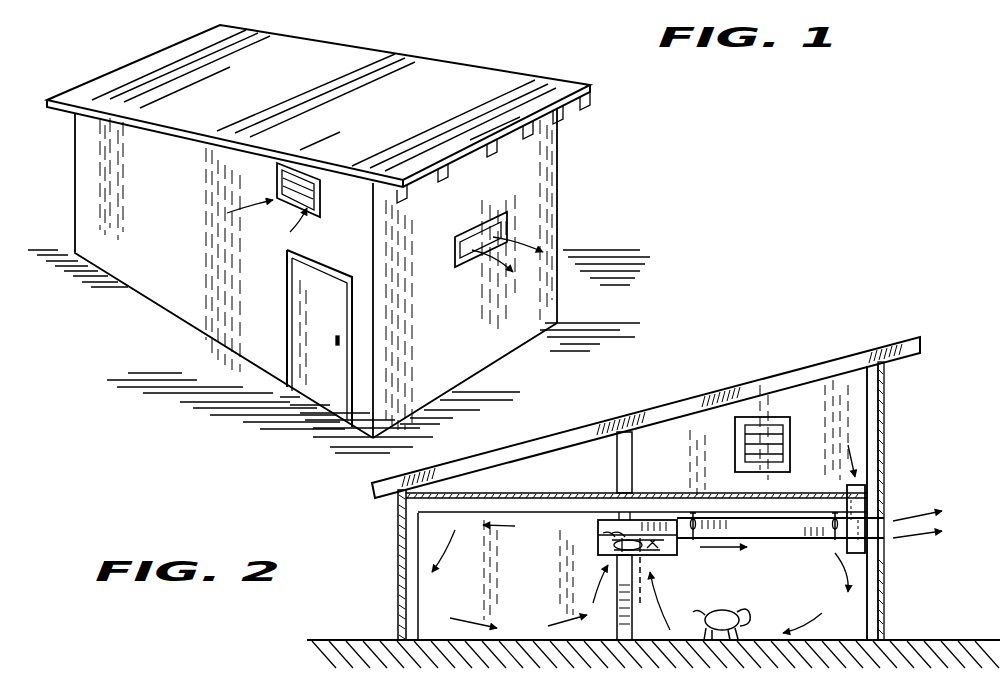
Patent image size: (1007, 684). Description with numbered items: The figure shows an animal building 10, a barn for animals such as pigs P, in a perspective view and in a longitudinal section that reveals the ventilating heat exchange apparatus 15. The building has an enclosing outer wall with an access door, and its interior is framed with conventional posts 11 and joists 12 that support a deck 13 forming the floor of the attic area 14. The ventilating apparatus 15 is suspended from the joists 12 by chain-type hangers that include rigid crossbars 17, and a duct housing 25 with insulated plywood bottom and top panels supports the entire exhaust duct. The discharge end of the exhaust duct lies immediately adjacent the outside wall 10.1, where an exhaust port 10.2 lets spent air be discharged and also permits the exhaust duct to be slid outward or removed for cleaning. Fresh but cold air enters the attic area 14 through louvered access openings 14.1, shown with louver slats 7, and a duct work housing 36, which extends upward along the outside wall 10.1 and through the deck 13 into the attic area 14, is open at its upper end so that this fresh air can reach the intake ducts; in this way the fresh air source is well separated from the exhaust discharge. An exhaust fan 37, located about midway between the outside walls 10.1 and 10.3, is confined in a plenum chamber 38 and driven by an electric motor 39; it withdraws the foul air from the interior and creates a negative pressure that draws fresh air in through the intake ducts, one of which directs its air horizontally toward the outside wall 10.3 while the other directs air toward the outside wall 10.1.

In FIG. 1, the building 10 is at (530, 66).
In FIG. 2, the building 10 is at (853, 340).
In FIG. 1, the outside wall 10.1 is at (480, 357).
In FIG. 2, the outside wall 10.1 is at (884, 598).
In FIG. 1, the exhaust port 10.2 is at (455, 262).
In FIG. 2, the outside wall 10.3 is at (400, 598).
In FIG. 1, the louvered access openings 14.1 is at (273, 207).
In FIG. 2, the louvered access openings 14.1 is at (757, 428).
In FIG. 2, the attic area 14 is at (845, 428).
In FIG. 2, the duct work housing 36 is at (856, 500).
In FIG. 2, the posts 11 is at (632, 470).
In FIG. 2, the deck 13 is at (742, 500).
In FIG. 2, the louver slats 7 is at (773, 452).
In FIG. 2, the joists 12 is at (480, 505).
In FIG. 2, the ventilating heat exchange apparatus 15 is at (587, 535).
In FIG. 2, the plenum chamber 38 is at (607, 562).
In FIG. 2, the electric motor 39 is at (645, 558).
In FIG. 2, the exhaust fan 37 is at (648, 596).
In FIG. 2, the rigid crossbars 17 is at (693, 540).
In FIG. 2, the duct housing 25 is at (790, 540).
In FIG. 2, the pigs P is at (723, 610).